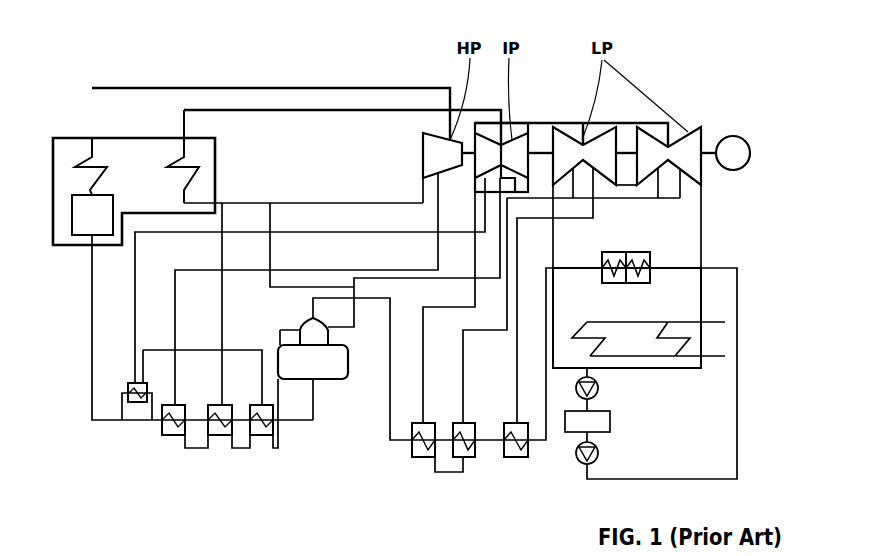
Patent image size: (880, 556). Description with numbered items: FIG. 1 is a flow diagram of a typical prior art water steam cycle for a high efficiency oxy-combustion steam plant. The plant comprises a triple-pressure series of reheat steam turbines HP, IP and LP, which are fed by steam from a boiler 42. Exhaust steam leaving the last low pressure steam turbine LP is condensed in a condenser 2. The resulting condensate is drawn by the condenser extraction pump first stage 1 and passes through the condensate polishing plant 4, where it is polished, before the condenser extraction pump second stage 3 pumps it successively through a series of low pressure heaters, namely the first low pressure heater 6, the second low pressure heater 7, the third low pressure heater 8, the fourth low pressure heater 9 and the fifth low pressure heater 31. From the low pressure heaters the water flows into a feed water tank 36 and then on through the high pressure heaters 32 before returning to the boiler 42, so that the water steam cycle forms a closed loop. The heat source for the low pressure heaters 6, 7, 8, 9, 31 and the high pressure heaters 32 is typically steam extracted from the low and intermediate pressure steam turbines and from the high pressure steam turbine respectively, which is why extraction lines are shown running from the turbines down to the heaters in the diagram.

The condenser extraction pump first stage 1 is at (598, 388).
The condenser 2 is at (703, 258).
The condenser extraction pump second stage 3 is at (598, 455).
The condensate polishing plant 4 is at (610, 426).
The low pressure heater #1 6 is at (642, 252).
The low pressure heater #2 7 is at (612, 252).
The low pressure heater #3 8 is at (508, 458).
The low pressure heater #4 9 is at (477, 458).
The low pressure heater #5 31 is at (423, 458).
The high pressure heaters 32 is at (270, 435).
The feed water tank 36 is at (346, 380).
The boiler 42 is at (63, 138).